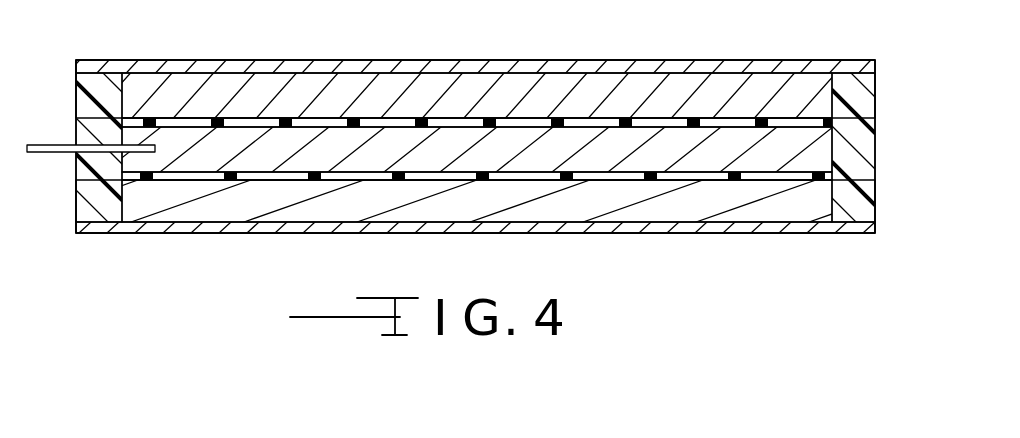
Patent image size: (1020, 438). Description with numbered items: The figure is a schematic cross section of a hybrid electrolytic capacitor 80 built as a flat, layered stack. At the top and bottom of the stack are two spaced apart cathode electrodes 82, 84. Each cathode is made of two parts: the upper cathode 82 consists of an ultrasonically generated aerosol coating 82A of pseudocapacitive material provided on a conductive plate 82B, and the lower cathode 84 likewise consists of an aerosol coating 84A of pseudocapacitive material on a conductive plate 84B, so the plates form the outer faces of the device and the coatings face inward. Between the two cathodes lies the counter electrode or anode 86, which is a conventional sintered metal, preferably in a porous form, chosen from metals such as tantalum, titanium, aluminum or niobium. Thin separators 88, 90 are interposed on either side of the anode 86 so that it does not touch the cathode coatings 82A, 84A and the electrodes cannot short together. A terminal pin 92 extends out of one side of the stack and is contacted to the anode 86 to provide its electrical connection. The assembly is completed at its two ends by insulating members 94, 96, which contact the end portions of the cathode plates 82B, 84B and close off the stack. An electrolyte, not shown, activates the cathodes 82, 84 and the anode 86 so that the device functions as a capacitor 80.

The electrolytic capacitor 80 is at (793, 49).
The cathode electrode 82 is at (376, 52).
The ultrasonically generated aerosol coating 82A is at (633, 90).
The conductive plate 82B is at (607, 25).
The cathode electrode 84 is at (693, 242).
The ultrasonically generated aerosol coating 84A is at (252, 202).
The conductive plate 84B is at (567, 234).
The anode 86 is at (235, 150).
The separator 88 is at (712, 118).
The separator 90 is at (758, 176).
The terminal pin 92 is at (50, 157).
The insulating member 94 is at (87, 108).
The insulating member 96 is at (863, 208).